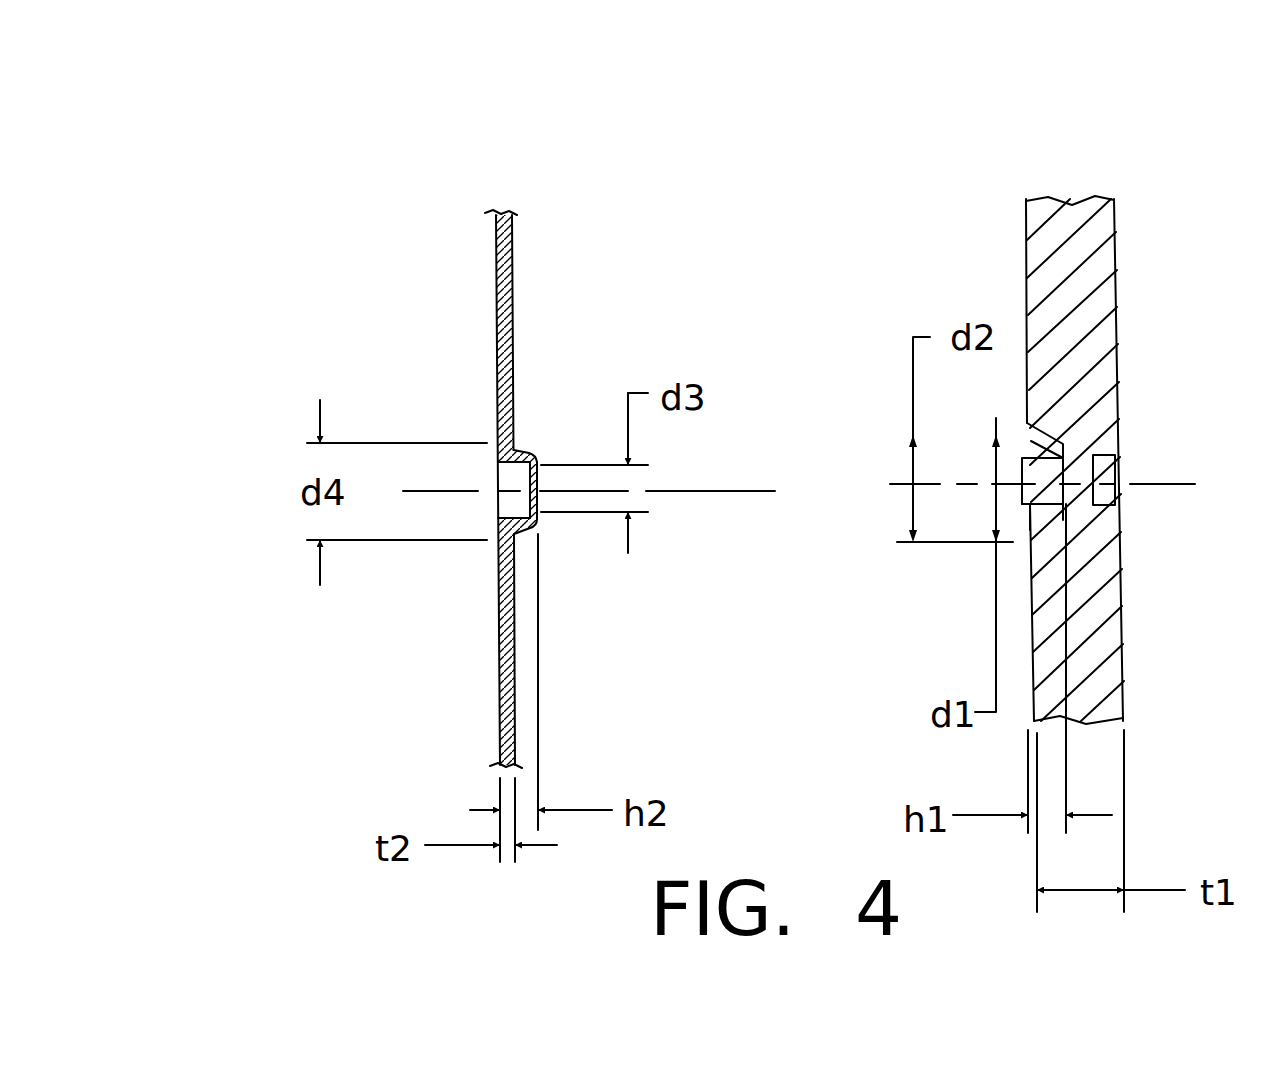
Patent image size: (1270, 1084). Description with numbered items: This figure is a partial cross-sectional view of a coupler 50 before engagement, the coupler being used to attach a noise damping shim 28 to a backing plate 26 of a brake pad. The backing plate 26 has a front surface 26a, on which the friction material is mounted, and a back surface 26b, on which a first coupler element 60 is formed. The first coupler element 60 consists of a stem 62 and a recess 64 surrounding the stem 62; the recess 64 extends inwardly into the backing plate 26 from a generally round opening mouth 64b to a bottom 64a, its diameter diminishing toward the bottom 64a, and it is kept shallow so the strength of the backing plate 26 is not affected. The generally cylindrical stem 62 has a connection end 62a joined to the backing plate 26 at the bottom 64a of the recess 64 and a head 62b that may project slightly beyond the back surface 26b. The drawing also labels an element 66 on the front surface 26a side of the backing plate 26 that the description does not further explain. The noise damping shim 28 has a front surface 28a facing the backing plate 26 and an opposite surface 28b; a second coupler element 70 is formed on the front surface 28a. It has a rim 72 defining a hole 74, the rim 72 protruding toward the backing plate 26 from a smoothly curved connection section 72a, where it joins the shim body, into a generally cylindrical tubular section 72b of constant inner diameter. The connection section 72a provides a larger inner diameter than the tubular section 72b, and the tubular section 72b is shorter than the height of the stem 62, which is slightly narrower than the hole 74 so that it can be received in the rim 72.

The coupler 50 is at (332, 293).
The noise damping shim 28 is at (494, 258).
The front surface of the noise damping shim 28a is at (513, 300).
The second face of second plate 28b is at (495, 353).
The rim 72 is at (515, 447).
The connection section 72a is at (508, 521).
The tubular section 72b is at (538, 575).
The hole 74 is at (518, 487).
The second coupler element 70 is at (557, 439).
The backing plate 26 is at (1090, 232).
The front surface of backing plate 26a is at (1115, 293).
The back surface of backing plate 26b is at (1025, 305).
The first coupler element 60 is at (1013, 424).
The stem 62 is at (1014, 491).
The connection end 62a is at (1027, 423).
The head 62b is at (1022, 458).
The recess 64 is at (1020, 528).
The bottom 64a is at (1063, 507).
The opening mouth 64b is at (1022, 506).
The recess 66 is at (1118, 478).